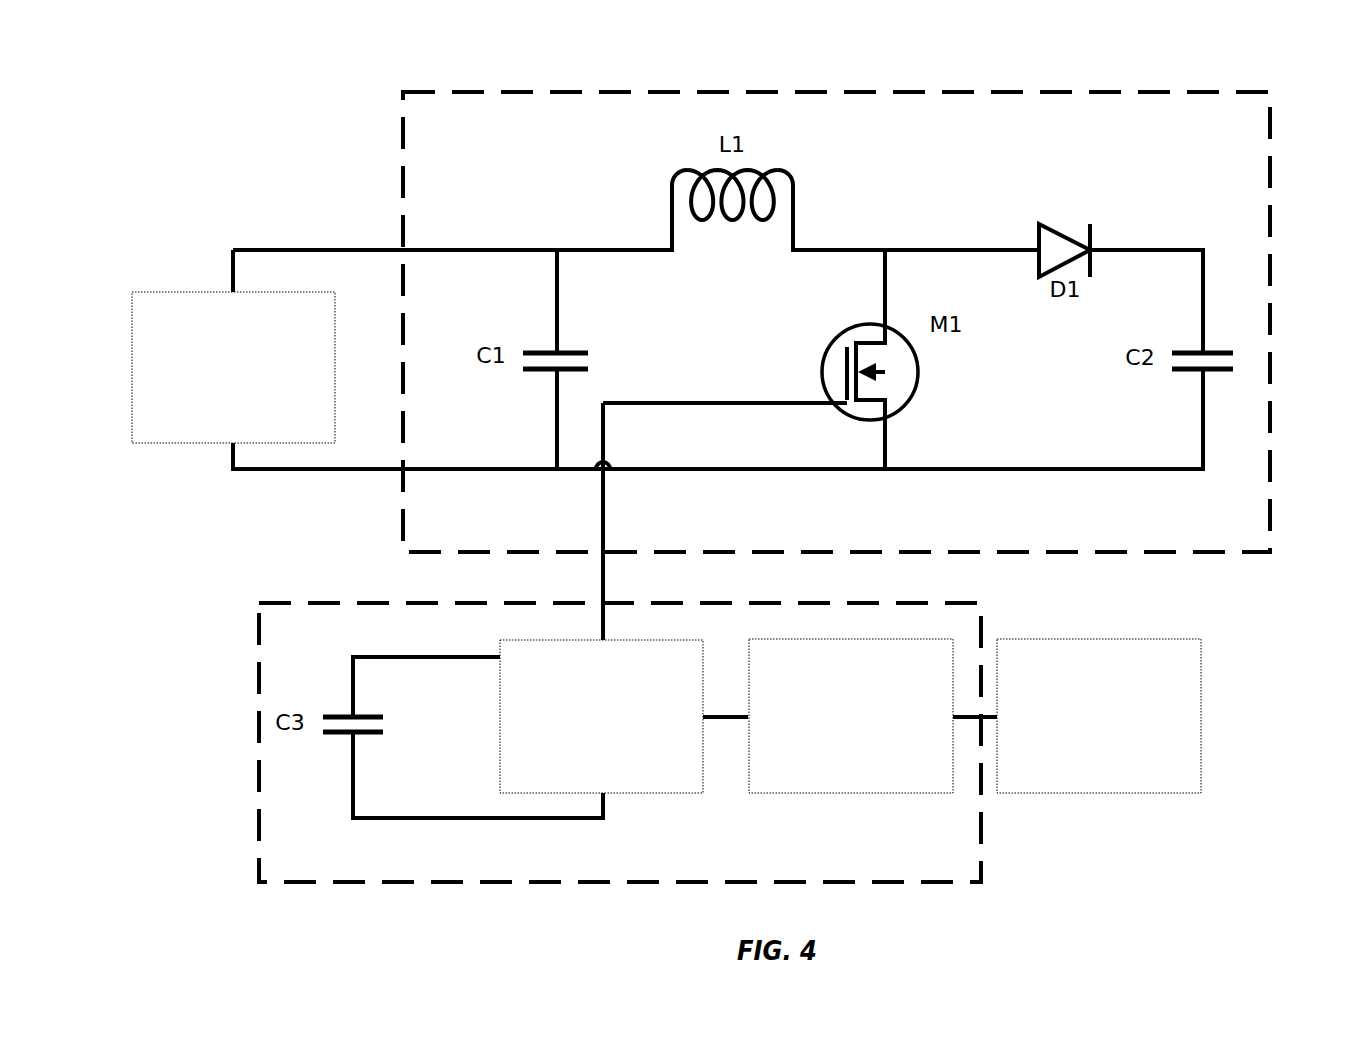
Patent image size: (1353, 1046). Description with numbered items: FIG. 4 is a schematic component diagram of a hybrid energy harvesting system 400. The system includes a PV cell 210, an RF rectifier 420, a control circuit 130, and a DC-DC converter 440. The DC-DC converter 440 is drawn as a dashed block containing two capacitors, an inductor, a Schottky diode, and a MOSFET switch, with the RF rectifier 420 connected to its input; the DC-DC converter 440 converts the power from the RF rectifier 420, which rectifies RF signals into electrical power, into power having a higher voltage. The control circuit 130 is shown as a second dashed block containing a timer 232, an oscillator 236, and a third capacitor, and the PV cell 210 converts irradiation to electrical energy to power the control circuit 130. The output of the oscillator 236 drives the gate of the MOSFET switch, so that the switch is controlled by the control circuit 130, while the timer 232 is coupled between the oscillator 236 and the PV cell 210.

The hybrid energy harvesting system 400 is at (262, 74).
The DC-DC converter 440 is at (403, 145).
The control circuit 130 is at (259, 832).
The RF rectifier 420 is at (233, 367).
The oscillator 236 is at (601, 716).
The timer 232 is at (851, 716).
The PV cell 210 is at (1099, 716).